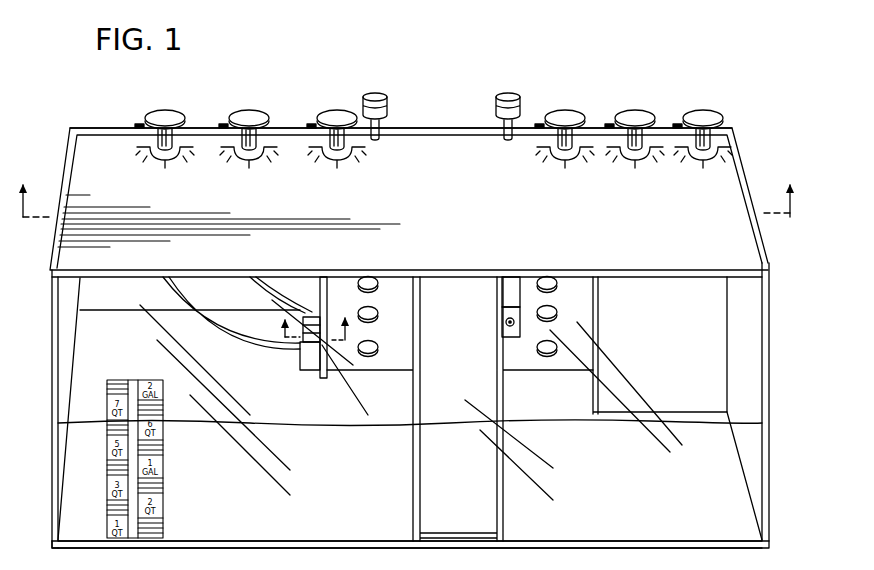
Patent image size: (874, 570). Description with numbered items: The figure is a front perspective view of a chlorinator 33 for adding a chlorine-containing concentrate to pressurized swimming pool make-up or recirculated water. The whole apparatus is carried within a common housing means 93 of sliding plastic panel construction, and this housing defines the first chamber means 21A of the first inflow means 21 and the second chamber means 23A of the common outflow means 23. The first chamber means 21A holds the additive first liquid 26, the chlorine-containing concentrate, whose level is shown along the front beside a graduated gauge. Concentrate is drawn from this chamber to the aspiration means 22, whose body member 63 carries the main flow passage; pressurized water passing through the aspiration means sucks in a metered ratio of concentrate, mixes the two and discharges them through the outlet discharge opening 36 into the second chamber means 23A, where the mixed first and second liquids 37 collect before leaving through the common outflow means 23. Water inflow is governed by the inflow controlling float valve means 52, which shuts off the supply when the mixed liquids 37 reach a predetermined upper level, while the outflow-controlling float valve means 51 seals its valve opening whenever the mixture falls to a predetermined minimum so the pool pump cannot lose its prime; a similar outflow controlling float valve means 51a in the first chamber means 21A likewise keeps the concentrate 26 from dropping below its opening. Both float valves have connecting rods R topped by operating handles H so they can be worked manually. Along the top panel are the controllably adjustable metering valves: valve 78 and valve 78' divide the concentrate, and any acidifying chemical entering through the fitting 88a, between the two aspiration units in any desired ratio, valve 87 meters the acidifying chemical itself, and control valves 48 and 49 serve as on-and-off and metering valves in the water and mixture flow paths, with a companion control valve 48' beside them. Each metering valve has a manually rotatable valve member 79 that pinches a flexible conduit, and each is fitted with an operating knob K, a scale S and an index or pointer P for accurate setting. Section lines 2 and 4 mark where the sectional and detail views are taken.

The first inflow means 21 is at (240, 90).
The first chamber means 21A is at (248, 523).
The common outflow means 23 is at (692, 552).
The second chamber means 23A is at (745, 448).
The common housing means 93 is at (60, 556).
The chlorinator 33 is at (735, 53).
The controllably adjustable metering valve means 87 is at (155, 104).
The controllably adjustable metering valve 78' is at (267, 113).
The controllably adjustable metering valve means 78 is at (348, 109).
The manually rotatable valve member 79 is at (344, 149).
The controllably adjustable valve means 49 is at (563, 100).
The control knob 48' is at (634, 106).
The controllably adjustable valve means 48 is at (714, 124).
The additive first liquid 26 is at (76, 423).
The mixed first and second liquids 37 is at (742, 418).
The inflow controlling float valve means 52 is at (693, 380).
The first-mentioned aspiration means 22 is at (512, 344).
The body member 63 is at (505, 294).
The outlet discharge opening 36 is at (505, 324).
The outflow-controlling float valve means 51 is at (558, 357).
The outflow controlling float valve means 51a is at (382, 356).
The fitting 88a is at (305, 361).
The section line 2- 2 is at (406, 185).
The section line 4- 4 is at (305, 316).
The operating knob K is at (166, 112).
The connecting rod R is at (145, 125).
The index or pointer means P is at (313, 124).
The scale means S is at (155, 165).
The operating handle H is at (378, 95).